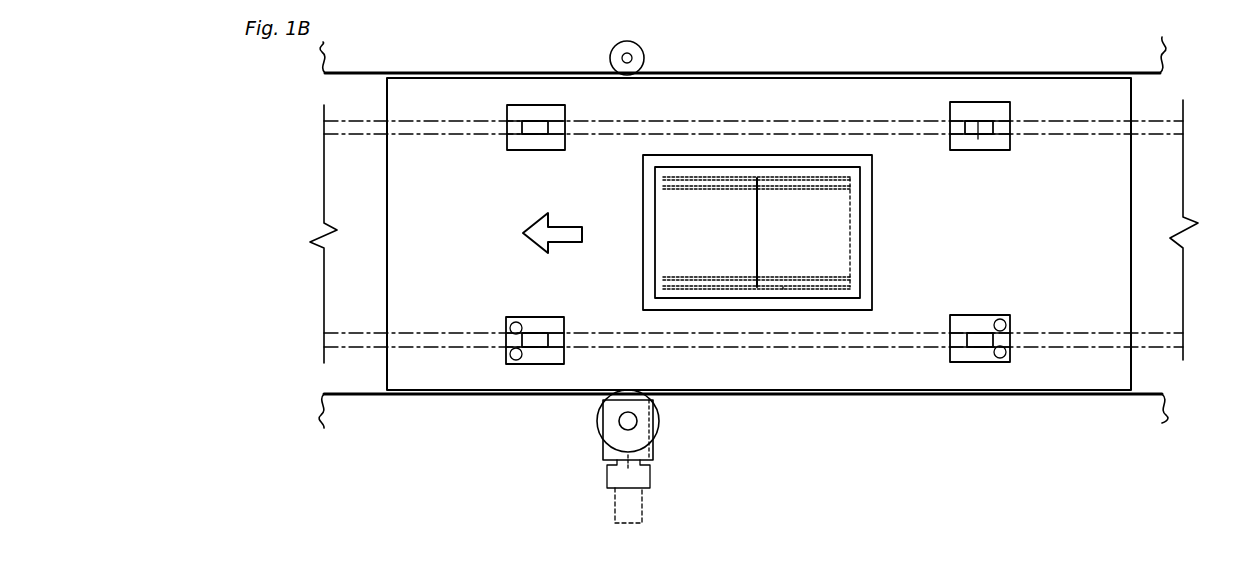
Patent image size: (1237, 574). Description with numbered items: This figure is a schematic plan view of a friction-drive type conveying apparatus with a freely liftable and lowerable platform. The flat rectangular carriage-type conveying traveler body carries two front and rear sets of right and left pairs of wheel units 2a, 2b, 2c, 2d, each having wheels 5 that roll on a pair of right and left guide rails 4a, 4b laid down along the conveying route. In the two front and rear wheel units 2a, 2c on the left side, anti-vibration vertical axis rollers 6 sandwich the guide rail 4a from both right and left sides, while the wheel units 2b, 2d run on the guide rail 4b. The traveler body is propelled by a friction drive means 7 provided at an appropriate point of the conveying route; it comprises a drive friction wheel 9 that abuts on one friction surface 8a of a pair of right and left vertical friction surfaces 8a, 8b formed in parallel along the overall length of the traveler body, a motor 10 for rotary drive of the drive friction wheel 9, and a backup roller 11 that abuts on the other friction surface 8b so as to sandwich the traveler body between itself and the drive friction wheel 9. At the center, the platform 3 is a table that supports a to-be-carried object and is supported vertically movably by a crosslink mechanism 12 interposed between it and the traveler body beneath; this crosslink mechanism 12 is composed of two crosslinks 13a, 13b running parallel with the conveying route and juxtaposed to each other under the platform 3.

The wheel unit 2a is at (535, 367).
The wheel unit 2b is at (535, 100).
The wheel unit 2c is at (978, 364).
The wheel unit 2d is at (980, 101).
The platform 3 is at (810, 218).
The guide rail 4a is at (333, 343).
The guide rail 4b is at (340, 128).
The wheel 5 is at (528, 122).
The anti-vibration vertical axis roller 6 is at (508, 353).
The friction drive means 7 is at (605, 480).
The friction surface 8a is at (752, 397).
The friction surface 8b is at (760, 73).
The drive friction wheel 9 is at (660, 423).
The motor 10 is at (630, 508).
The backup roller 11 is at (625, 40).
The crosslink mechanism 12 is at (783, 290).
The crosslink 13a is at (703, 290).
The crosslink 13b is at (702, 177).